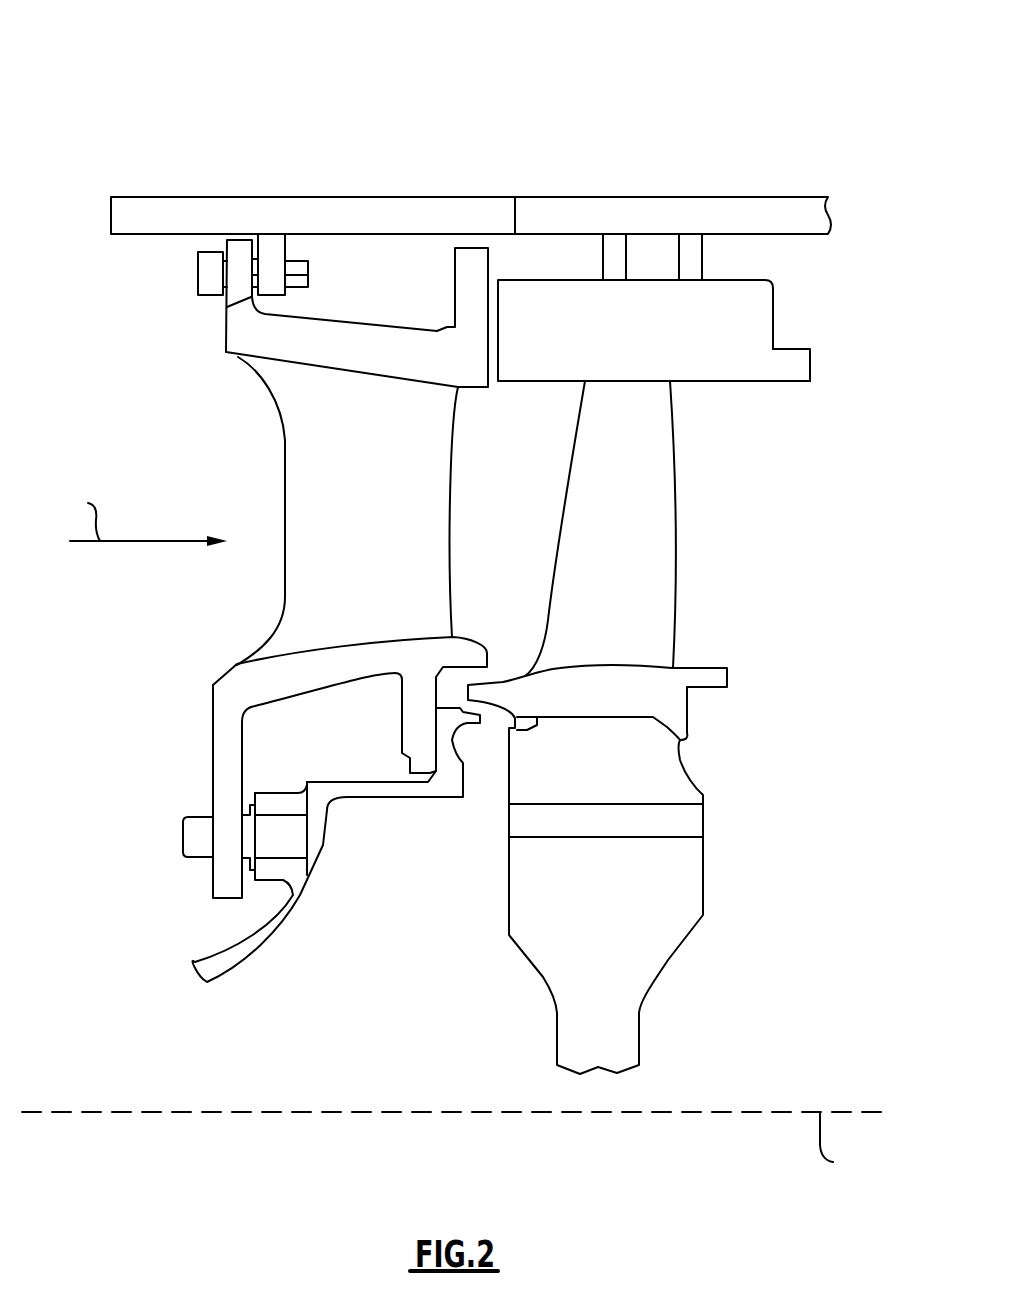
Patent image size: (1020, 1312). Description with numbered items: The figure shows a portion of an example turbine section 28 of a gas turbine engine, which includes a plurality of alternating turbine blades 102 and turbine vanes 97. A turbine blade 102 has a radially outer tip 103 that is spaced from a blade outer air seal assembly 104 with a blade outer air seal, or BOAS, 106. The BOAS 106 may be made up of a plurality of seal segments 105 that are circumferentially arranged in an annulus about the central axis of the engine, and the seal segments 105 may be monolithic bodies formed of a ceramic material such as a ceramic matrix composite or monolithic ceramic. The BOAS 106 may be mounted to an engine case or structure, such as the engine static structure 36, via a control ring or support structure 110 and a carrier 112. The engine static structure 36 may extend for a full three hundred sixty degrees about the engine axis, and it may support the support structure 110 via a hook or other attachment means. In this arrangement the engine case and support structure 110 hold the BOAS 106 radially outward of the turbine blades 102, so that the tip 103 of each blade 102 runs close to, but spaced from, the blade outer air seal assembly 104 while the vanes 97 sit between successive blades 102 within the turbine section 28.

The turbine section 28 is at (750, 87).
The engine static structure 36 is at (176, 214).
The turbine vane 97 is at (458, 360).
The turbine blade 102 is at (657, 500).
The radially outer tip 103 is at (654, 382).
The blade outer air seal assembly 104 is at (824, 302).
The seal segment 105 is at (796, 358).
The blade outer air seal 106 is at (794, 370).
The support structure 110 is at (559, 210).
The carrier 112 is at (616, 258).